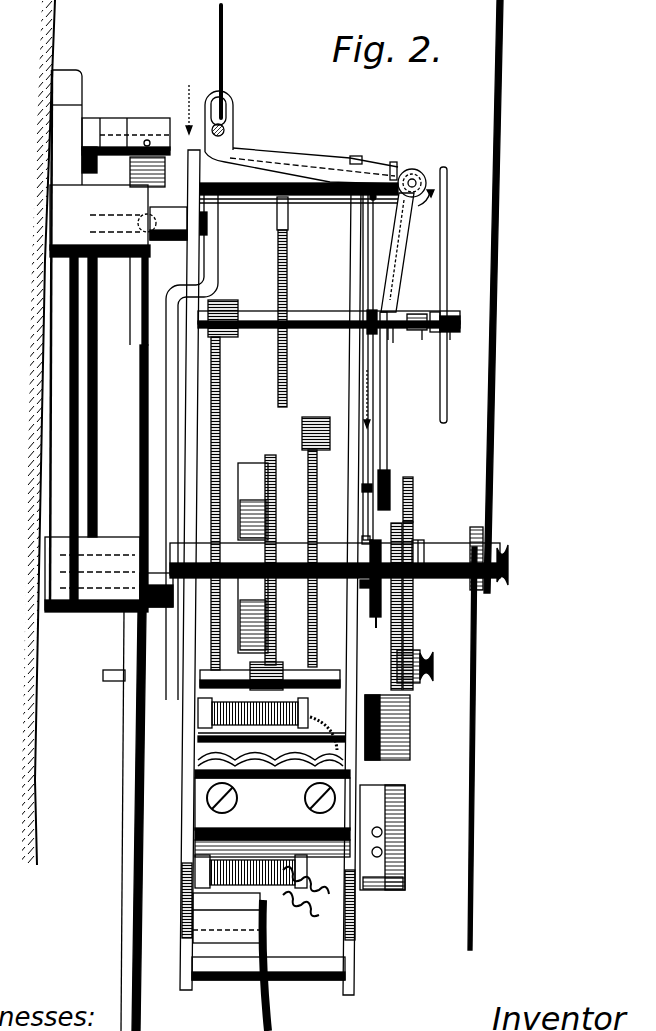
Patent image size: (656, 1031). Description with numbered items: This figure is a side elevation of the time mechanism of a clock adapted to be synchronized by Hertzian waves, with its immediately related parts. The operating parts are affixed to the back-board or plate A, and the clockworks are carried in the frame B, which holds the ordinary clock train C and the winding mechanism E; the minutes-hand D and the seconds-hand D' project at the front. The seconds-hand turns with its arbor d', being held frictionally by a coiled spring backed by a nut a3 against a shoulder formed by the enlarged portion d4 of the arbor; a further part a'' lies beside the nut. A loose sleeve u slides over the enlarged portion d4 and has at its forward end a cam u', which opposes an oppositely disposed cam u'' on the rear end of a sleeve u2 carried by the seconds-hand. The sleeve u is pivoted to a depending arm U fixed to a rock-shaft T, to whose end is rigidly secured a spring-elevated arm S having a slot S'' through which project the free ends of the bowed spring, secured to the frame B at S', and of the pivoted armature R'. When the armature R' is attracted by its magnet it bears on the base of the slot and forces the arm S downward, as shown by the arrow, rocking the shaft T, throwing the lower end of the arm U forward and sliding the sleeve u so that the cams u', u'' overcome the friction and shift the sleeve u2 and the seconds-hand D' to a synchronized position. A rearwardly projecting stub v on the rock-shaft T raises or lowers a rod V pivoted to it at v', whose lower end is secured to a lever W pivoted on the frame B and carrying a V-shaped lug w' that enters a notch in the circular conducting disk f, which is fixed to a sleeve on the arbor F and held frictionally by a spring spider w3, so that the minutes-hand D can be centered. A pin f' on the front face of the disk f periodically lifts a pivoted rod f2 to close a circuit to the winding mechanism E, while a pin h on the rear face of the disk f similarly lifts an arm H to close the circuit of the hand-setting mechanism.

The back-board or plate A is at (104, 515).
The spring-elevated arm S is at (236, 61).
The slot S'' is at (234, 112).
The armature R' is at (239, 122).
The spring securing point S' is at (299, 168).
The stub v is at (390, 160).
The rock-shaft T is at (414, 180).
The pivot v' is at (350, 213).
The depending arm U is at (400, 249).
The seconds-hand D' is at (456, 295).
The minutes-hand D is at (494, 475).
The seconds-hand shaft d' is at (329, 313).
The enlarged shaft portion d4 is at (398, 312).
The loose sleeve u is at (393, 345).
The cam u' is at (415, 309).
The cam u'' is at (426, 344).
The seconds-hand sleeve u2 is at (442, 312).
The nut a3 is at (455, 318).
The rod a'' is at (462, 345).
The clockworks frame B is at (195, 398).
The rod V is at (386, 424).
The clock train C is at (270, 572).
The arm H is at (324, 567).
The lever W is at (388, 490).
The V-shaped lug w' is at (349, 495).
The pin h is at (362, 540).
The spring spider w3 is at (360, 585).
The conducting disk f is at (375, 592).
The metallic rod f2 is at (416, 506).
The shaft or arbor F is at (422, 542).
The pin f' is at (417, 606).
The winding mechanism E is at (271, 864).